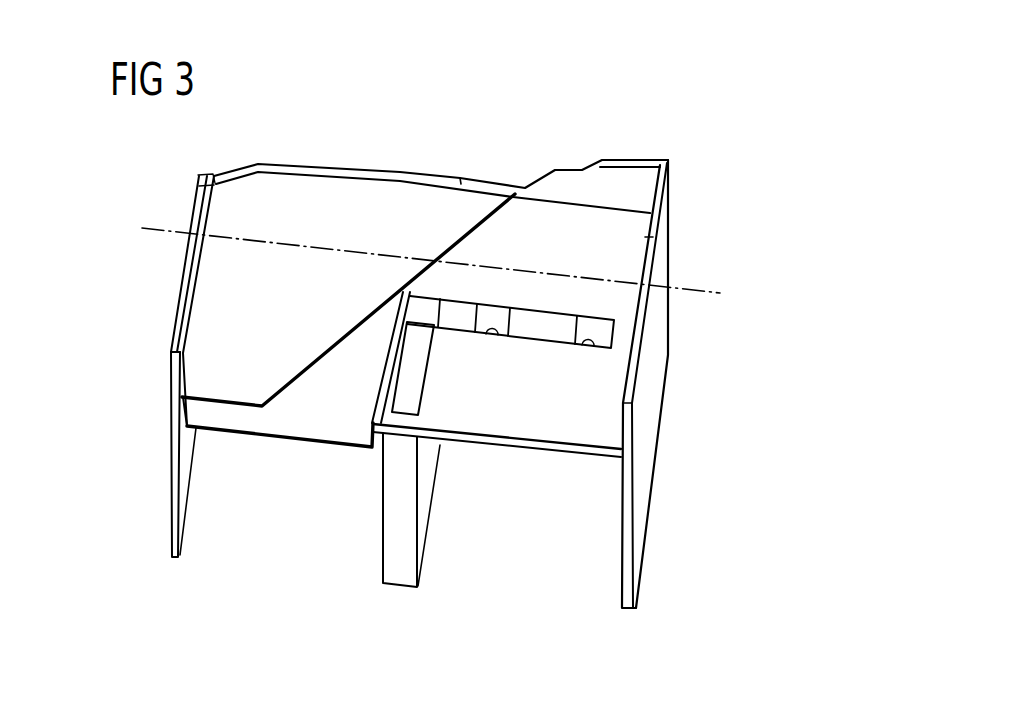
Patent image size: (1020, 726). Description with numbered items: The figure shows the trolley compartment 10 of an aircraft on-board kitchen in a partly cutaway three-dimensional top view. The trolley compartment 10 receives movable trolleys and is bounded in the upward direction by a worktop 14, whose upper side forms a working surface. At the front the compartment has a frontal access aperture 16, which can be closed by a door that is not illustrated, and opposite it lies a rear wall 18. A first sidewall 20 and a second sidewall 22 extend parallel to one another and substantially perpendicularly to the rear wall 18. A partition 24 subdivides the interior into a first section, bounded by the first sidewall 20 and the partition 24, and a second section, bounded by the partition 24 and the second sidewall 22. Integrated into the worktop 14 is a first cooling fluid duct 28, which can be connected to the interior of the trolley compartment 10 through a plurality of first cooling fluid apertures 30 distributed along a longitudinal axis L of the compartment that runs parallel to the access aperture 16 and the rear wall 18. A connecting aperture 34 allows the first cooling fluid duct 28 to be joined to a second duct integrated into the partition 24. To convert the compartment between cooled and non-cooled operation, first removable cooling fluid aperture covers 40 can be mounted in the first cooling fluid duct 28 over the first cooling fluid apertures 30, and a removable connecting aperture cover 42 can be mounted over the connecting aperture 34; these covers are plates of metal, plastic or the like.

The trolley compartment 10 is at (710, 253).
The worktop 14 is at (465, 252).
The frontal access aperture 16 is at (537, 552).
The rear wall 18 is at (653, 161).
The first sidewall 20 is at (170, 450).
The second sidewall 22 is at (653, 390).
The partition 24 is at (400, 576).
The first cooling fluid duct 28 is at (540, 312).
The first cooling fluid apertures 30 is at (516, 309).
The connecting aperture 34 is at (413, 378).
The first removable cooling fluid aperture covers 40 is at (495, 310).
The removable connecting aperture cover 42 is at (402, 396).
The longitudinal axis L is at (340, 248).